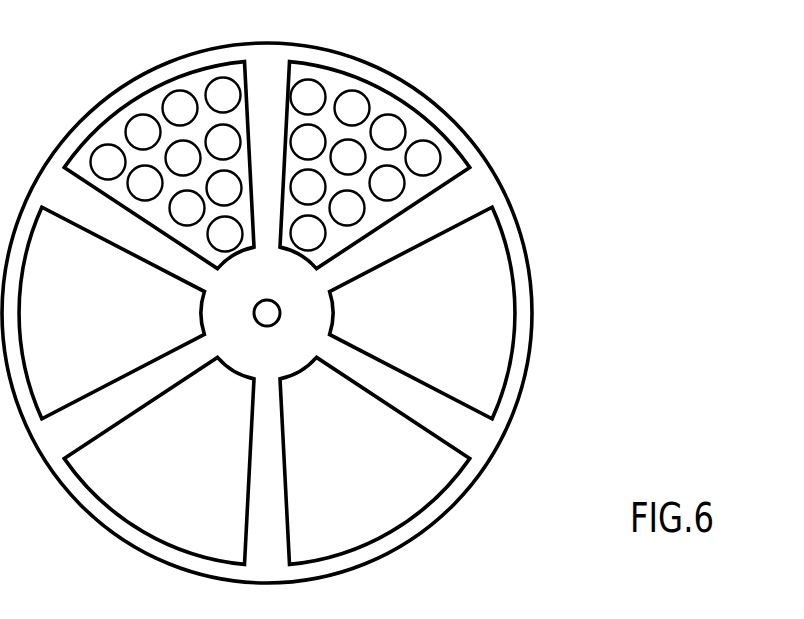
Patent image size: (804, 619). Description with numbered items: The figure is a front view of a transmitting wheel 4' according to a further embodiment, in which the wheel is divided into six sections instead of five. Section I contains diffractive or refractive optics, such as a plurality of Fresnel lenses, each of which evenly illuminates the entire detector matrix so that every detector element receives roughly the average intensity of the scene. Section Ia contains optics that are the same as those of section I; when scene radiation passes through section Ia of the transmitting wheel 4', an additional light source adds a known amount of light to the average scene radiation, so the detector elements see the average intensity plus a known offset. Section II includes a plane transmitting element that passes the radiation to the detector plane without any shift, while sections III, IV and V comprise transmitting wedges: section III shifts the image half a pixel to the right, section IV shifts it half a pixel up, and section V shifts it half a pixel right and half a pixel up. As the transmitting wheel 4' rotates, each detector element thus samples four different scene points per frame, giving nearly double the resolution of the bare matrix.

The transmitting wheel 4' is at (352, 313).
The section I is at (175, 97).
The section Ia is at (369, 102).
The section II is at (422, 313).
The section III is at (375, 460).
The section IV is at (159, 460).
The section V is at (111, 313).